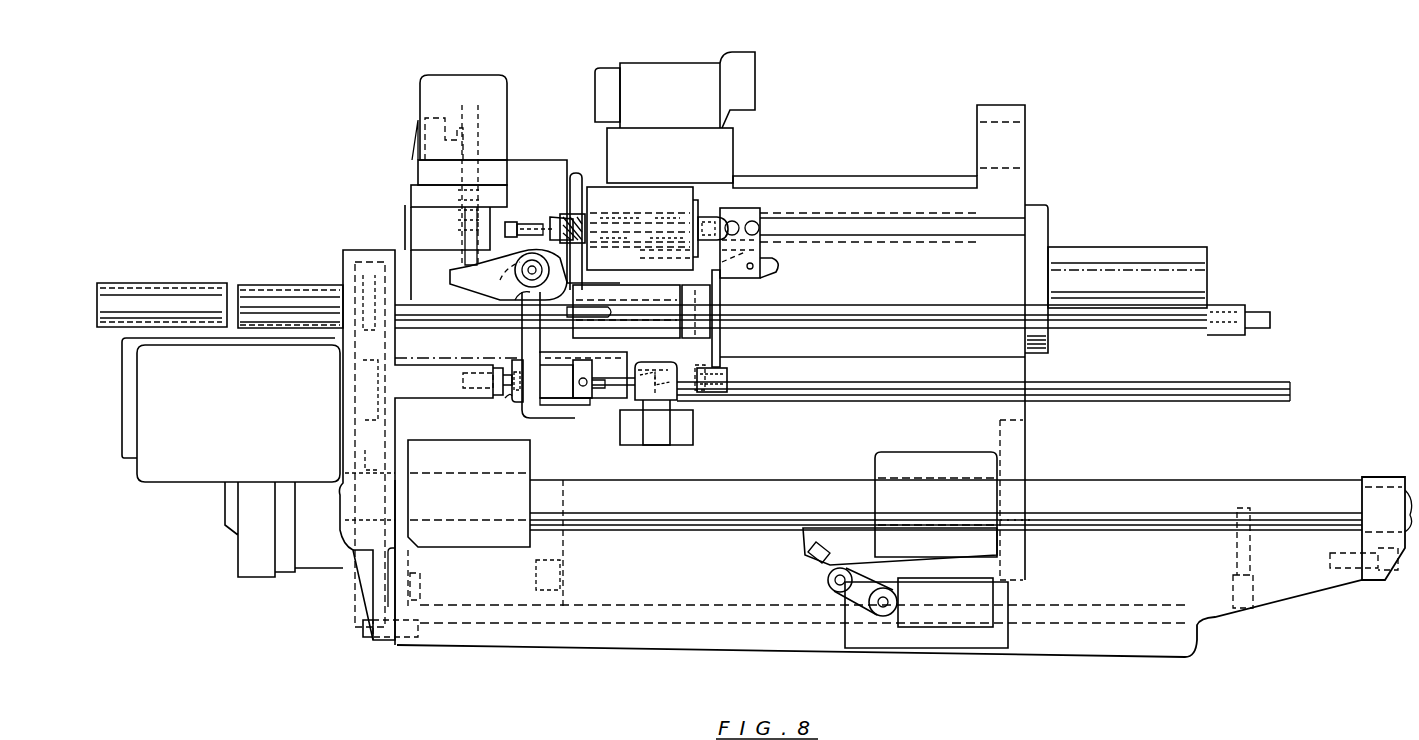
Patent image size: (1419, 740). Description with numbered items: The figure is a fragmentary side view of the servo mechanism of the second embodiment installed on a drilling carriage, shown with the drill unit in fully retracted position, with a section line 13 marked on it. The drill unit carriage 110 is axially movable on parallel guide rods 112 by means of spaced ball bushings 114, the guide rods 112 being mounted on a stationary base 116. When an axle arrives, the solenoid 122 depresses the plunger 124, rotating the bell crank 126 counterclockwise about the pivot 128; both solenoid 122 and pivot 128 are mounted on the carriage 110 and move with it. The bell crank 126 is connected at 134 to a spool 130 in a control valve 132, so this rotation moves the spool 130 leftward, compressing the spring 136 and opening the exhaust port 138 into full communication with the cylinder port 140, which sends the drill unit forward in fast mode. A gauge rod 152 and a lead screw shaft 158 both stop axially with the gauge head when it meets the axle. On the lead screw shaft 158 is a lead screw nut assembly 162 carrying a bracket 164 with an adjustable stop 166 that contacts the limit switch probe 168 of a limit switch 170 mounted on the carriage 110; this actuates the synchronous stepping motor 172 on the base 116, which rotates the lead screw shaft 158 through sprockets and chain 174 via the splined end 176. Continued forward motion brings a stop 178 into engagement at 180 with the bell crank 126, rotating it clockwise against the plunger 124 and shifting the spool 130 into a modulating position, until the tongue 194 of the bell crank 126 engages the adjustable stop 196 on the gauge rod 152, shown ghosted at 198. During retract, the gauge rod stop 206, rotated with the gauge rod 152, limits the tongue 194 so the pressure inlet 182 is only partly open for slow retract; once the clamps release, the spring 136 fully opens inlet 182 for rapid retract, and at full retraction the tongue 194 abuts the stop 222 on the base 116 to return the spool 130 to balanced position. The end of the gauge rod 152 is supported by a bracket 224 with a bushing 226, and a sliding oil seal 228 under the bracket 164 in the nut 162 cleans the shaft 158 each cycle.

The section line / pin 13 is at (402, 223).
The drill unit carriage 110 is at (1028, 193).
The guide rods 112 is at (1208, 492).
The ball bushings 114 is at (472, 440).
The stationary base 116 is at (779, 562).
The solenoid 122 is at (432, 88).
The plunger 124 is at (470, 256).
The bell crank 126 is at (470, 288).
The pivot 128 is at (540, 290).
The spool 130 is at (653, 266).
The control valve 132 is at (575, 190).
The connection 134 is at (556, 217).
The spring 136 is at (566, 212).
The exhaust port 138 is at (618, 215).
The cylinder port 140 is at (650, 215).
The gauge rod 152 is at (1247, 402).
The lead screw shaft 158 is at (1237, 316).
The lead screw nut assembly 162 is at (688, 282).
The bracket 164 is at (722, 345).
The adjustable stop 166 is at (705, 395).
The limit switch probe 168 is at (700, 370).
The limit switch 170 is at (608, 410).
The synchronous stepping motor 172 is at (232, 457).
The sprockets and chain 174 is at (340, 365).
The splined end 176 is at (178, 300).
The stop 178 is at (614, 316).
The engagement point 180 is at (560, 300).
The pressure inlet 182 is at (680, 215).
The tongue 194 is at (500, 357).
The adjustable stop 196 is at (590, 400).
The ghosted position 198 is at (600, 355).
The gauge rod stop 206 is at (540, 420).
The stop 222 is at (516, 400).
The bracket 224 is at (700, 438).
The bushing 226 is at (655, 400).
The sliding oil seal 228 is at (720, 308).